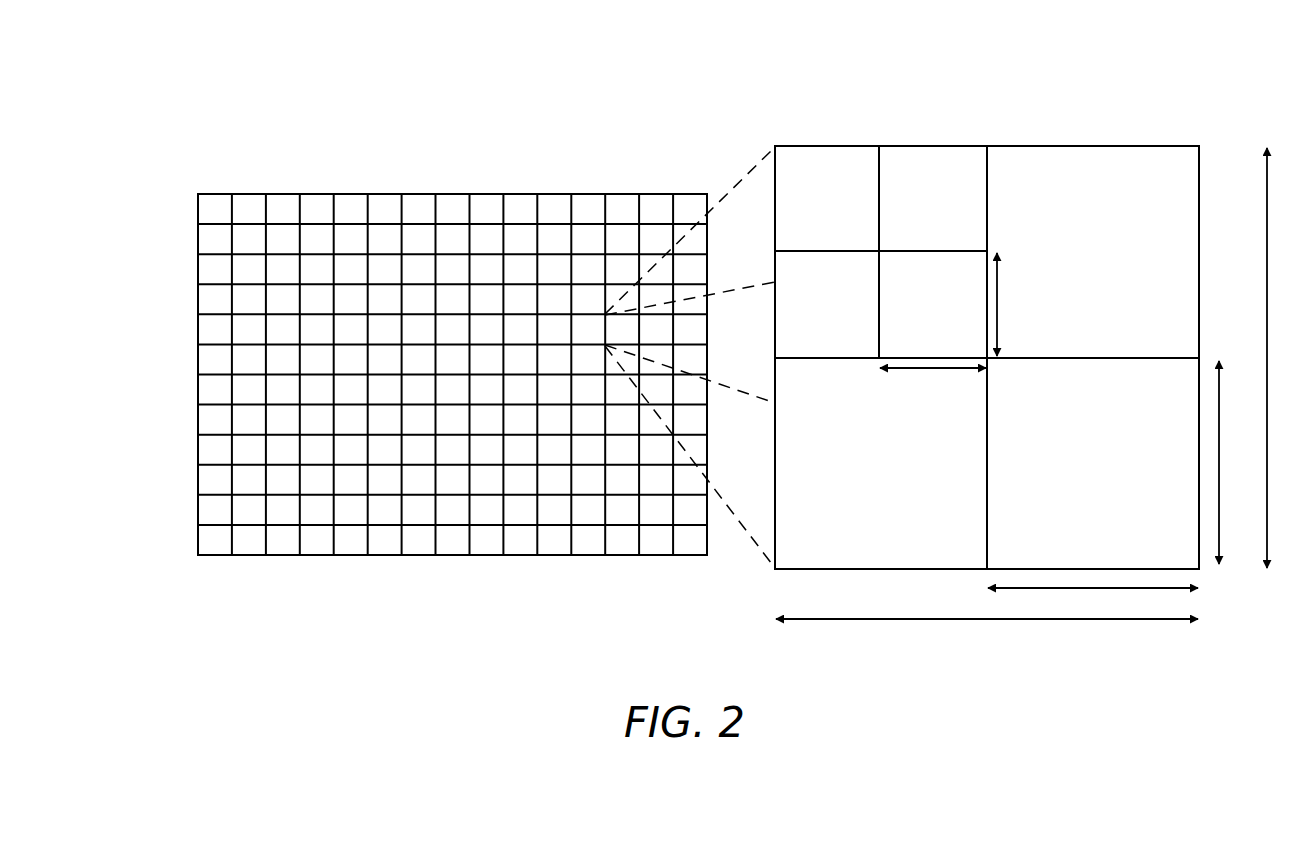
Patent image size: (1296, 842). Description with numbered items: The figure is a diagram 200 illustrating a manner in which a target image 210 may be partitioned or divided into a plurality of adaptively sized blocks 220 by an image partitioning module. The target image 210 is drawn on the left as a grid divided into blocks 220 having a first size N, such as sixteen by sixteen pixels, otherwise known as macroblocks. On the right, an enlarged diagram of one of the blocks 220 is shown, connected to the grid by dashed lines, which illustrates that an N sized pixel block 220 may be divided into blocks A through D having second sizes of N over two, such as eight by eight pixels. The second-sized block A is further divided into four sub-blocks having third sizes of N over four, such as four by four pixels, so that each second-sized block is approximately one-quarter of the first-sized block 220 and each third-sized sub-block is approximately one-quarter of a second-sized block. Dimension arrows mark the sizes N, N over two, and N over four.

The diagram 200 is at (241, 69).
The target image 210 is at (383, 194).
The blocks 220 is at (519, 194).